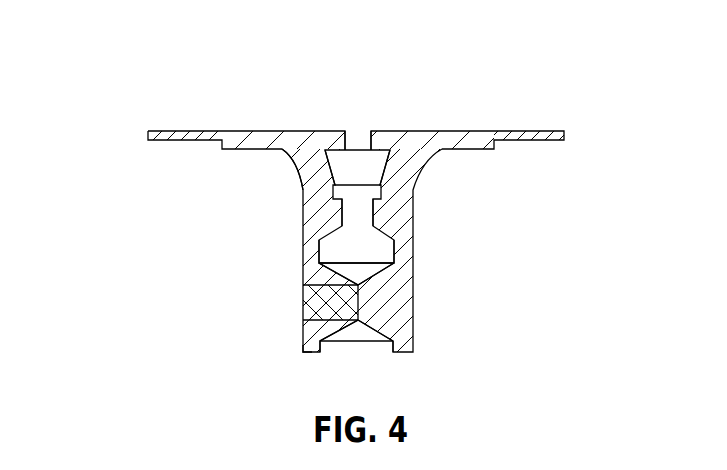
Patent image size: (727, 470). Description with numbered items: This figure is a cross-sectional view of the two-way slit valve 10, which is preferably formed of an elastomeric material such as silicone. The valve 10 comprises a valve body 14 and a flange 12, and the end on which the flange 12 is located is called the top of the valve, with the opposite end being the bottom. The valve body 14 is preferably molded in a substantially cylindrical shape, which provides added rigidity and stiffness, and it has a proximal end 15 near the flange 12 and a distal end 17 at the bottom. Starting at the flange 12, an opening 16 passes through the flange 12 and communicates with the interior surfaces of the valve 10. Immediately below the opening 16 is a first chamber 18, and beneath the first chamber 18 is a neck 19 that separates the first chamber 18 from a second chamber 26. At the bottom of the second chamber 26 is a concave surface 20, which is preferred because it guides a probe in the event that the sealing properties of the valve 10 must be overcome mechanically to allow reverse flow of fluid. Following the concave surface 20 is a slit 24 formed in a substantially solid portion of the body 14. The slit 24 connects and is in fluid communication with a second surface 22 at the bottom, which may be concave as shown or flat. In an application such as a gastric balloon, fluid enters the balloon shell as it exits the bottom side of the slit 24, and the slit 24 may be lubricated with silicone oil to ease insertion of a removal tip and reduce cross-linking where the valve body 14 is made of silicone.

The slit valve 10 is at (153, 107).
The flange 12 is at (410, 135).
The valve body 14 is at (405, 257).
The proximal end 15 is at (287, 159).
The opening 16 is at (340, 138).
The distal end 17 is at (305, 341).
The first chamber 18 is at (343, 168).
The neck 19 is at (363, 210).
The concave surface 20 is at (360, 275).
The second surface 22 is at (363, 337).
The slit 24 is at (358, 301).
The second chamber 26 is at (338, 243).